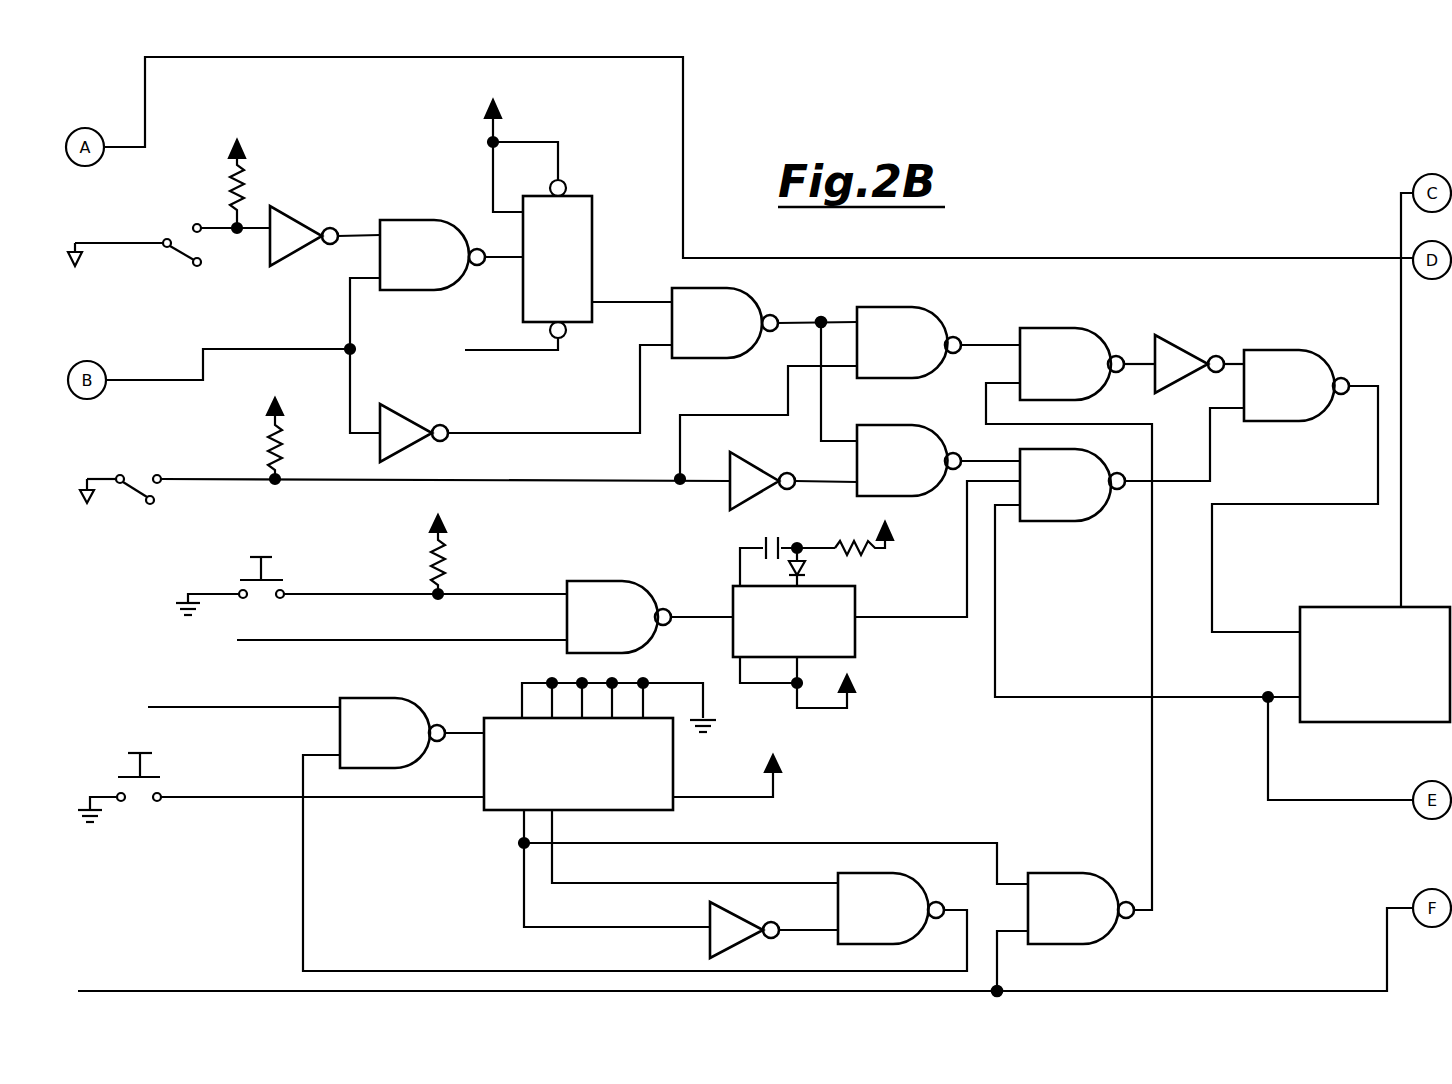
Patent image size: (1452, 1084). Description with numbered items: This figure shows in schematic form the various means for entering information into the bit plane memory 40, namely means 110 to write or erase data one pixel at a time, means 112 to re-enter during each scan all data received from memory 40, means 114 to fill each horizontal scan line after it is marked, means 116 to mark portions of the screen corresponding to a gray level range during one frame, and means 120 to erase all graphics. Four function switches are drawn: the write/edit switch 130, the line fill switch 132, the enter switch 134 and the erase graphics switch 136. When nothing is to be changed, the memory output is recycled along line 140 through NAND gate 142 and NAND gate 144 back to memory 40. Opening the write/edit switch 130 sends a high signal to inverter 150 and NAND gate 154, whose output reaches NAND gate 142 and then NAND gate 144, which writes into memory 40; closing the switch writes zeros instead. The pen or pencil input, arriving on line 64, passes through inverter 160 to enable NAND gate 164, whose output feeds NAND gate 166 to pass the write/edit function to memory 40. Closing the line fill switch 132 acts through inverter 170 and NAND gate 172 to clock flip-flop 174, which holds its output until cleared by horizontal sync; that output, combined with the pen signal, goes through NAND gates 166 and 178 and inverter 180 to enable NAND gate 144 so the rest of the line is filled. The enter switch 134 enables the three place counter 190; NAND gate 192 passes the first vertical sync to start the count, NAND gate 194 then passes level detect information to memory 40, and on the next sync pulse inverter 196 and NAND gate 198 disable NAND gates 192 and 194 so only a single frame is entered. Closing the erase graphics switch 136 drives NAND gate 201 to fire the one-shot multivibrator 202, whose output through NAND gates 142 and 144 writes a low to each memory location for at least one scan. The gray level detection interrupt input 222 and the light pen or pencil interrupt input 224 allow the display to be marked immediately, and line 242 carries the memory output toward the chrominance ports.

The memory 40 is at (1380, 694).
The line from terminal B 64 is at (260, 349).
The means to write or erase data 110 is at (404, 479).
The means to re-enter displayed data 112 is at (1048, 752).
The means to fill horizontal scan line 114 is at (169, 234).
The means to mark gray level portions 116 is at (281, 818).
The means to erase all graphics 120 is at (327, 588).
The write/edit switch 130 is at (140, 492).
The line fill switch 132 is at (172, 265).
The enter switch 134 is at (160, 768).
The erase graphics switch 136 is at (283, 566).
The line 140 is at (995, 604).
The NAND gate 142 is at (1077, 586).
The NAND gate 144 is at (1290, 400).
The inverter 150 is at (726, 492).
The NAND gate 154 is at (903, 476).
The inverter 160 is at (400, 455).
The NAND gate 164 is at (720, 338).
The NAND gate 166 is at (903, 358).
The inverter 170 is at (272, 262).
The NAND gate 172 is at (428, 270).
The flip-flop 174 is at (594, 230).
The NAND gate 178 is at (1065, 378).
The inverter 180 is at (1172, 335).
The three place counter 190 is at (584, 786).
The NAND gate 192 is at (384, 748).
The NAND gate 194 is at (1074, 924).
The inverter 196 is at (734, 947).
The NAND gate 198 is at (884, 924).
The NAND gate 201 is at (611, 632).
The one-shot multivibrator 202 is at (798, 636).
The gray level detection interrupt input 222 is at (1240, 991).
The light pen or light pencil interrupt input 224 is at (683, 125).
The line to terminal E 242 is at (1262, 808).